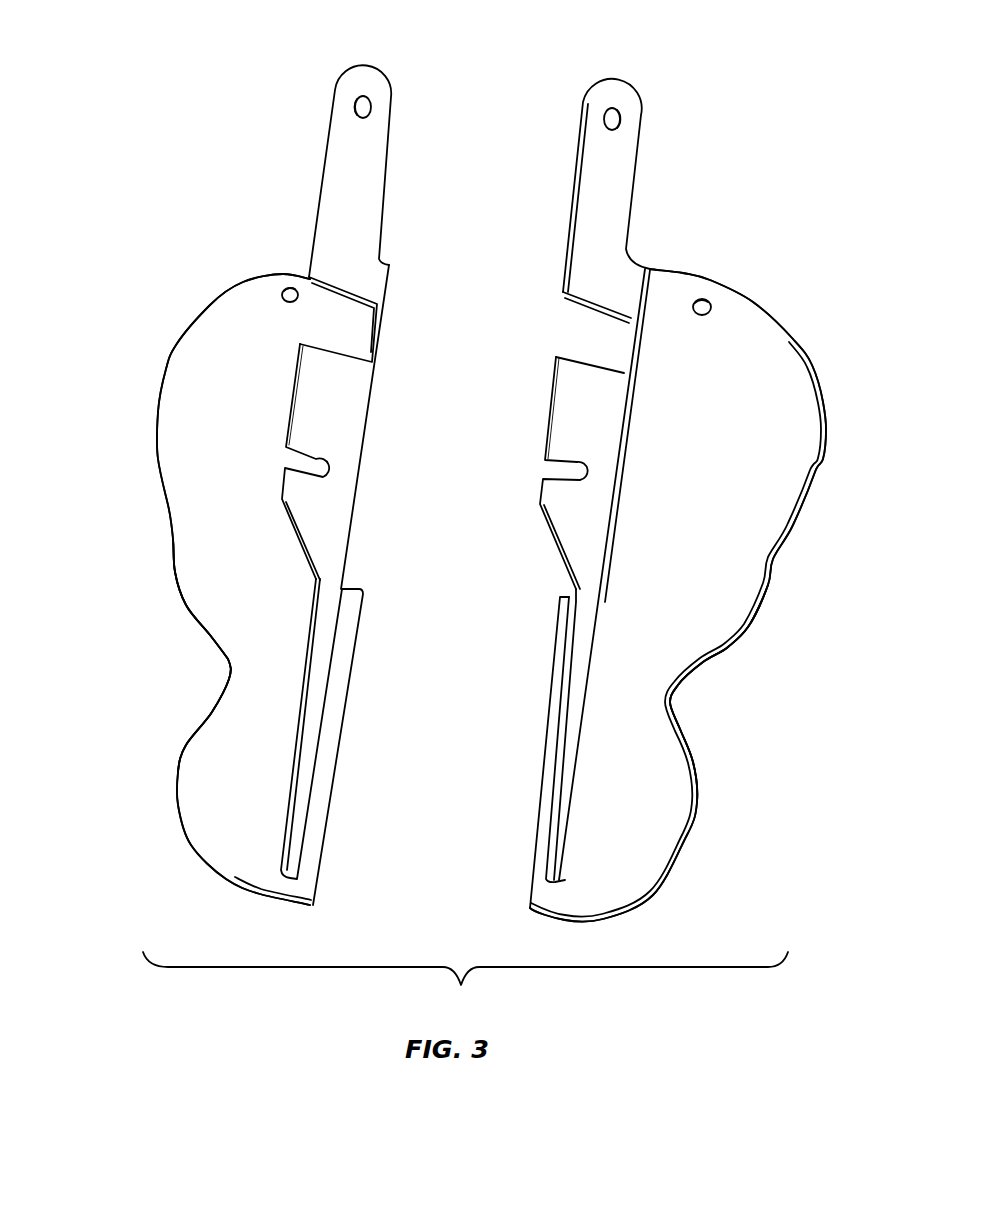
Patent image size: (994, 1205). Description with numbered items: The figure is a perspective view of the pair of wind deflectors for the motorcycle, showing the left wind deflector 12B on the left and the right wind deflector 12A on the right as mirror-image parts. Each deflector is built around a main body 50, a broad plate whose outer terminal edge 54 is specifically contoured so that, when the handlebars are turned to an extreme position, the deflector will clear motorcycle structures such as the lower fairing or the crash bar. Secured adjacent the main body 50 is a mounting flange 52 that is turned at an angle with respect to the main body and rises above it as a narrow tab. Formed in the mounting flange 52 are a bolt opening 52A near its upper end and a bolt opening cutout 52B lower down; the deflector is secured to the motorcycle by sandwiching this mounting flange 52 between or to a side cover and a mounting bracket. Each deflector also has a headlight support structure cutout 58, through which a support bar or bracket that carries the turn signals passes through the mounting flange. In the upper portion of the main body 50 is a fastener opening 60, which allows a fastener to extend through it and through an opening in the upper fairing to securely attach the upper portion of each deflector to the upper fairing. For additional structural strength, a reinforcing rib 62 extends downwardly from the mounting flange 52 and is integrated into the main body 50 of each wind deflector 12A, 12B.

The right wind deflector 12A is at (770, 772).
The left wind deflector 12B is at (153, 670).
The main body 50 is at (177, 455).
The mounting flange 52 is at (350, 183).
The bolt opening 52A is at (360, 105).
The bolt opening cutout 52B is at (313, 453).
The outer terminal edge 54 is at (167, 538).
The headlight support structure cutout 58 is at (363, 306).
The fastener opening 60 is at (283, 290).
The reinforcing rib 62 is at (563, 678).